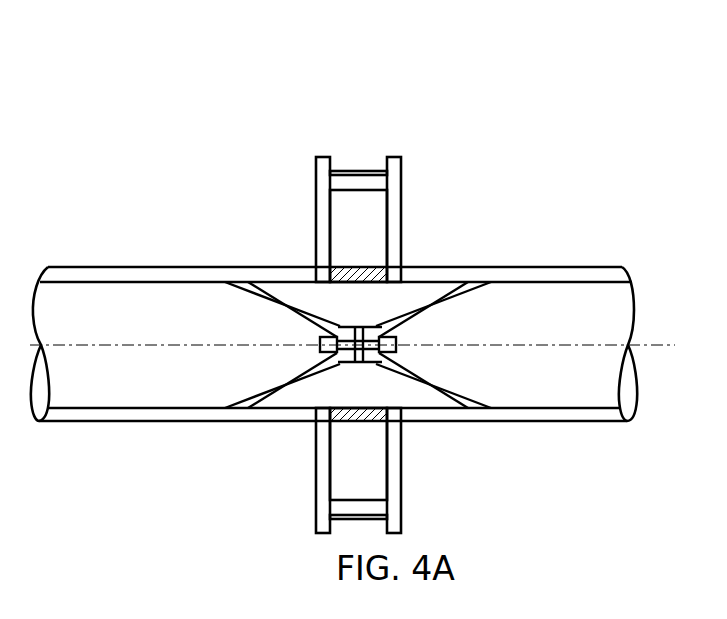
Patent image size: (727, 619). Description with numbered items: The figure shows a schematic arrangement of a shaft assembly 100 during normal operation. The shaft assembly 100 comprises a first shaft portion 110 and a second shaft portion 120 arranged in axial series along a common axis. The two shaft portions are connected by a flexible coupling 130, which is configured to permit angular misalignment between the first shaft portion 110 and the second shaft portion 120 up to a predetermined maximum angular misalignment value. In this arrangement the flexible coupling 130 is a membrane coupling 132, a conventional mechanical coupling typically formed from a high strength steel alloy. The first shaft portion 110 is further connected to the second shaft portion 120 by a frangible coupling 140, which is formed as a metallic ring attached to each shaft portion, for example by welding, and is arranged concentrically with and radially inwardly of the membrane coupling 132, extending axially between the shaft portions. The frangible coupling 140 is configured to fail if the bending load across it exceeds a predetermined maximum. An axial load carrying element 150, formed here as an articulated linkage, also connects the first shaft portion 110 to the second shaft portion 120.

The shaft assembly 100 is at (154, 106).
The first shaft portion 110 is at (116, 266).
The second shaft portion 120 is at (577, 266).
The flexible coupling 130 is at (402, 175).
The membrane coupling 132 is at (314, 173).
The frangible coupling 140 is at (361, 267).
The axial load carrying element 150 is at (266, 302).